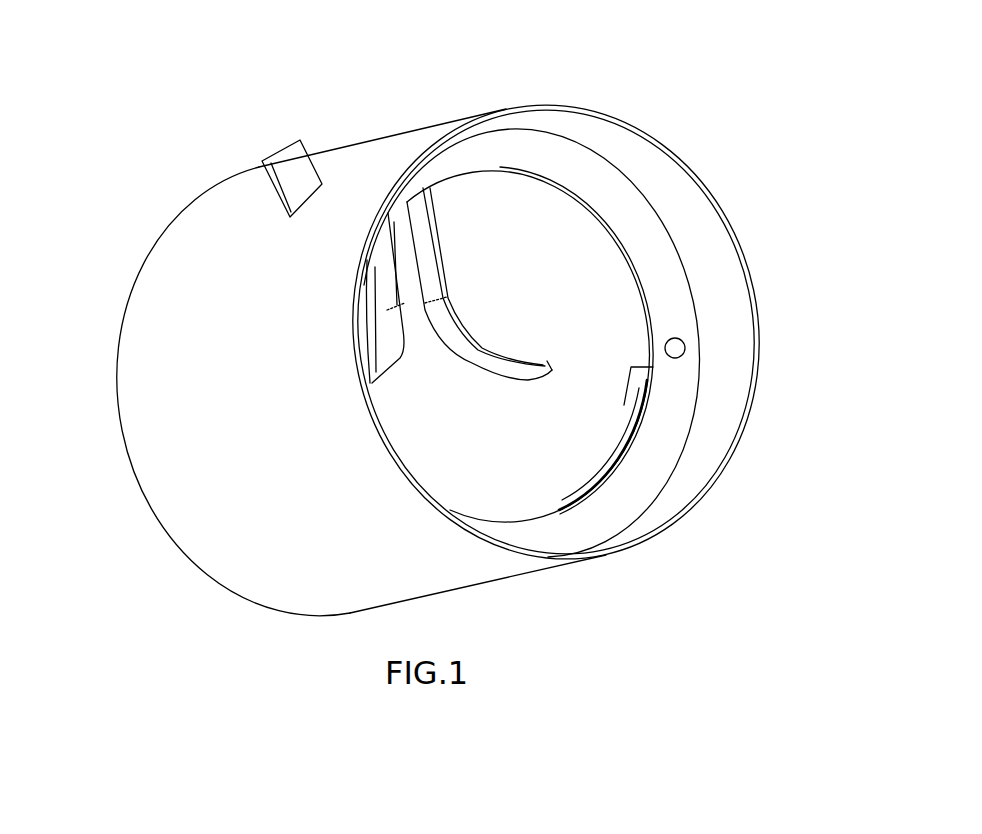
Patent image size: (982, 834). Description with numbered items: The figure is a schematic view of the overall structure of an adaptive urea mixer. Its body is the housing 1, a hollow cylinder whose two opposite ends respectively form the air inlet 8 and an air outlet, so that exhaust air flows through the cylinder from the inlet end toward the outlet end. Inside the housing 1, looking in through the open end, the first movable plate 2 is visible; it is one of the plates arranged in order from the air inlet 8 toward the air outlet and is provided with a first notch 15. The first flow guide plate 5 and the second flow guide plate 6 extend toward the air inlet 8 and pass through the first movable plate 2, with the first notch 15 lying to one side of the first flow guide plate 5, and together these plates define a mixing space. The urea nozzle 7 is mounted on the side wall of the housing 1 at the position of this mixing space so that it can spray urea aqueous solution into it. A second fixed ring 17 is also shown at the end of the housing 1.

The housing 1 is at (318, 362).
The first movable plate 2 is at (530, 262).
The first flow guide plate 5 is at (461, 191).
The second flow guide plate 6 is at (711, 366).
The urea nozzle 7 is at (236, 133).
The air inlet 8 is at (601, 332).
The first notch 15 is at (348, 210).
The second fixed ring 17 is at (552, 297).